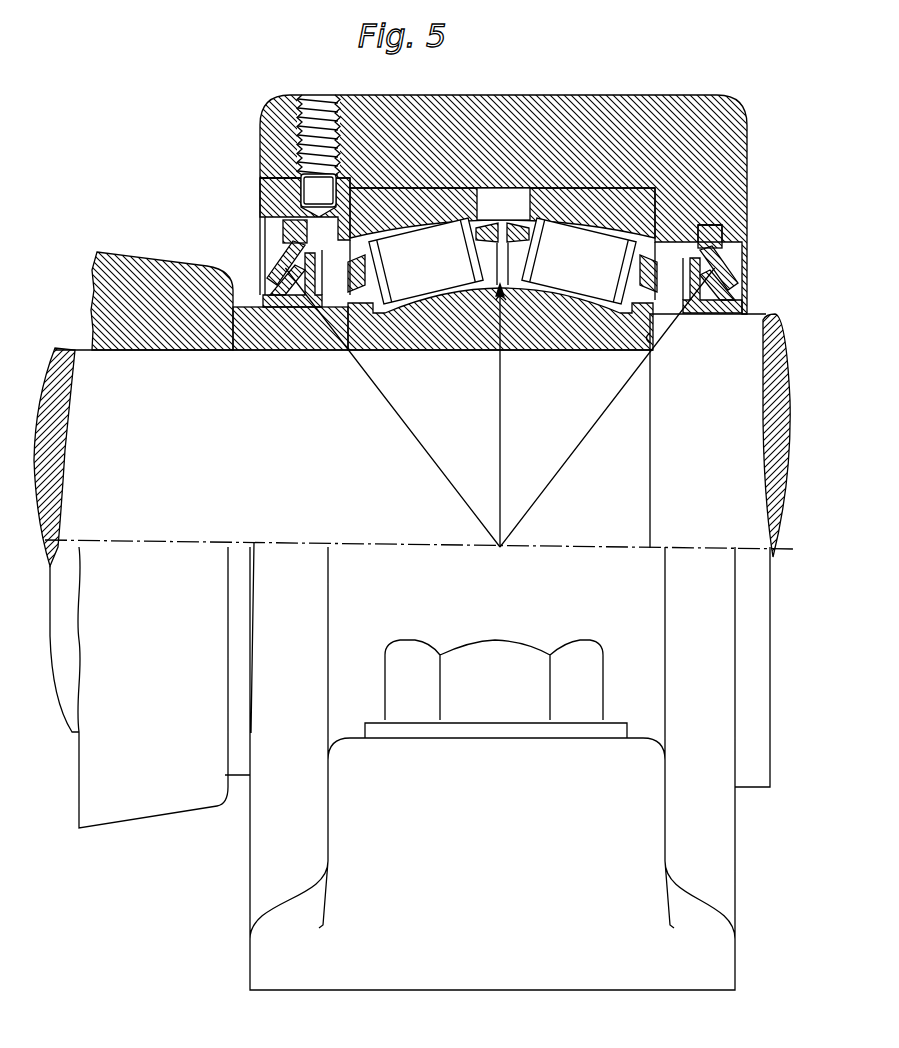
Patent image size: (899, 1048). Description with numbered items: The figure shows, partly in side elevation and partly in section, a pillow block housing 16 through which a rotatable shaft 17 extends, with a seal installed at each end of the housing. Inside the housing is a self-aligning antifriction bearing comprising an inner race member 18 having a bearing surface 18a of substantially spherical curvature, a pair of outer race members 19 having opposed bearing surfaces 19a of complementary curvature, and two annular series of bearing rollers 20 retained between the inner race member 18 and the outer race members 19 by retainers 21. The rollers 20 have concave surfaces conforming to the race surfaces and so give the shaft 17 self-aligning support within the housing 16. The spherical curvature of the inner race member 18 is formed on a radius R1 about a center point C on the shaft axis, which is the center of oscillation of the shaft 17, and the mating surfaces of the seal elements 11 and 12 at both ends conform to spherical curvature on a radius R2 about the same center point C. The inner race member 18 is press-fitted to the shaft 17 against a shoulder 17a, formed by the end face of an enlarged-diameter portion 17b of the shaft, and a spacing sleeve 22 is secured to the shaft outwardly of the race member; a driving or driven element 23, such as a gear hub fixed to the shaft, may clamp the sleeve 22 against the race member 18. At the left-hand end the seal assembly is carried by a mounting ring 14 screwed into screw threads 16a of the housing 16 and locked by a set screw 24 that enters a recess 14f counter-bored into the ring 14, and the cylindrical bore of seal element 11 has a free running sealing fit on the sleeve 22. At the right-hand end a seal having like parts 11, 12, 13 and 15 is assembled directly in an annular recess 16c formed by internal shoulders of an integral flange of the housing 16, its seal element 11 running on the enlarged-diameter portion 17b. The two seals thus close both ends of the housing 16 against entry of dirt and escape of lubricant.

The seal element 11 is at (725, 283).
The seal element 12 is at (713, 253).
The seal part 13 is at (690, 263).
The mounting ring 14 is at (275, 192).
The recess 14f is at (343, 186).
The seal part 15 is at (722, 240).
The housing 16 is at (485, 103).
The screw threads 16a is at (268, 180).
The annular recess 16c is at (717, 223).
The shaft 17 is at (133, 363).
The shoulder 17a is at (652, 340).
The enlarged-diameter portion 17b is at (713, 332).
The inner race member 18 is at (460, 335).
The bearing surface 18a is at (505, 300).
The outer race members 19 is at (473, 192).
The bearing surfaces 19a is at (473, 212).
The bearing rollers 20 is at (432, 230).
The retainers 21 is at (367, 228).
The spacing sleeve 22 is at (278, 338).
The driving or driven element 23 is at (163, 270).
The set screw 24 is at (312, 108).
The radius R1 is at (502, 423).
The radius R2 is at (391, 407).
The center point C is at (496, 549).